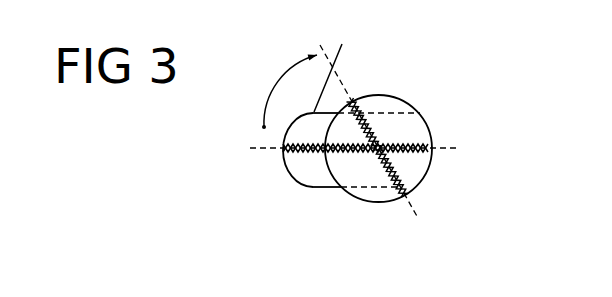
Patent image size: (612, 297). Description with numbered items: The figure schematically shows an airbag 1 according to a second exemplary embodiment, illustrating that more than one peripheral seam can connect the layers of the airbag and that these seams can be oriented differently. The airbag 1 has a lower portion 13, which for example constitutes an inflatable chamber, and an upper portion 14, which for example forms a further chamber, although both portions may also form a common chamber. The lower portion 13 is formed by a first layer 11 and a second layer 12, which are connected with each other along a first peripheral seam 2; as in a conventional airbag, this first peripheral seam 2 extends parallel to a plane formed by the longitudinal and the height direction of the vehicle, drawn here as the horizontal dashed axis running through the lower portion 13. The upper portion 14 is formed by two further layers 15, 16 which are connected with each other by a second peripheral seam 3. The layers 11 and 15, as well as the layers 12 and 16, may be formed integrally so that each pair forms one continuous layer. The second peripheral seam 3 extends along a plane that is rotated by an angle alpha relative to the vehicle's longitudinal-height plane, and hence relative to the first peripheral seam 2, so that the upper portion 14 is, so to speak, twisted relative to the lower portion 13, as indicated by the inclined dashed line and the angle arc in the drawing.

The airbag 1 is at (442, 182).
The first peripheral seam 2 is at (285, 150).
The second peripheral seam 3 is at (413, 207).
The first layer 11 is at (343, 64).
The second layer 12 is at (295, 178).
The lower portion 13 is at (312, 192).
The upper portion 14 is at (399, 95).
The further layer 15 is at (425, 123).
The further layer 16 is at (380, 202).